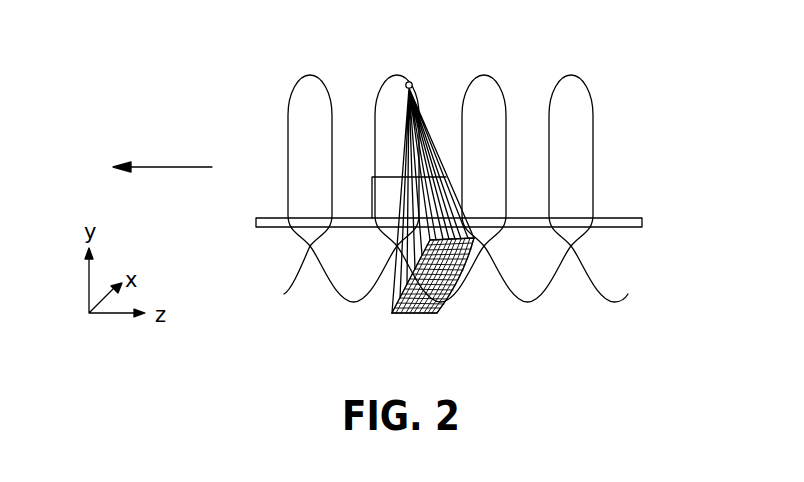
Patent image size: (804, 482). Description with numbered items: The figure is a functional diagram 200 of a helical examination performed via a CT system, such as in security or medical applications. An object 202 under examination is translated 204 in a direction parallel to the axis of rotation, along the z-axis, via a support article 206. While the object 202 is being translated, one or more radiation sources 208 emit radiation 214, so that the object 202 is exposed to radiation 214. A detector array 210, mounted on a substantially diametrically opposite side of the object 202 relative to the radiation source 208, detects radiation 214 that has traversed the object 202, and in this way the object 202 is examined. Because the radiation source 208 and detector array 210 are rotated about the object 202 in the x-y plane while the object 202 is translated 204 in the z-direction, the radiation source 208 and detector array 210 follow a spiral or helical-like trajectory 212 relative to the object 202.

The functional diagram 200 is at (172, 35).
The object 202 is at (371, 177).
The translation 204 is at (162, 167).
The support article 206 is at (632, 217).
The radiation source 208 is at (411, 81).
The detector array 210 is at (412, 305).
The helical trajectory 212 is at (562, 77).
The radiation 214 is at (428, 132).